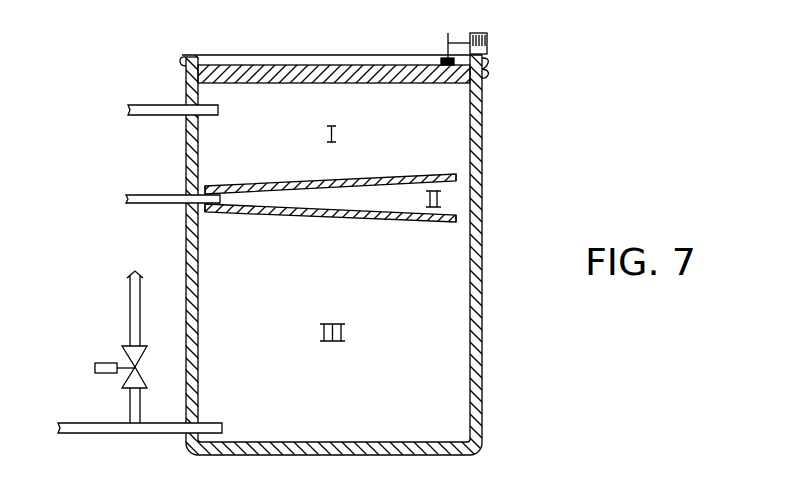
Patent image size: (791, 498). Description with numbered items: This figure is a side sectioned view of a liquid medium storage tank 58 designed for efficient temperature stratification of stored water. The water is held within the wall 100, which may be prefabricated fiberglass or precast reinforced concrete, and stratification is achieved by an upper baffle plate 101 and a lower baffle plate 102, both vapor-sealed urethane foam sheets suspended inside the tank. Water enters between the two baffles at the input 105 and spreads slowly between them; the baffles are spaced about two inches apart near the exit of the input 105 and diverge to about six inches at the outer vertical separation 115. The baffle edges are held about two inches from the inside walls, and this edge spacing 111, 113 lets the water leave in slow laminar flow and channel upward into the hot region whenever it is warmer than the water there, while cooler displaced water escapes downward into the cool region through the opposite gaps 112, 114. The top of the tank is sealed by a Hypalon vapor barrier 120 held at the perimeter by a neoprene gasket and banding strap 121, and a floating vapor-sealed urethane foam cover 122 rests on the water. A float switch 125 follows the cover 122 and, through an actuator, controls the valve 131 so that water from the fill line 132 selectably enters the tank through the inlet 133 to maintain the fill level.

The storage tank 58 is at (395, 240).
The tank wall 100 is at (483, 401).
The upper baffle plate 101 is at (308, 182).
The lower baffle plate 102 is at (368, 219).
The input 105 is at (144, 193).
The edge spacing 111 is at (459, 168).
The gap 112 is at (206, 175).
The edge spacing 113 is at (457, 229).
The gap 114 is at (205, 219).
The outer vertical separation 115 is at (464, 203).
The vapor barrier 120 is at (395, 237).
The gasket and banding strap 121 is at (181, 72).
The cover 122 is at (370, 64).
The float switch 125 is at (489, 25).
The valve 131 is at (101, 363).
The fill line 132 is at (137, 298).
The inlet 133 is at (170, 434).